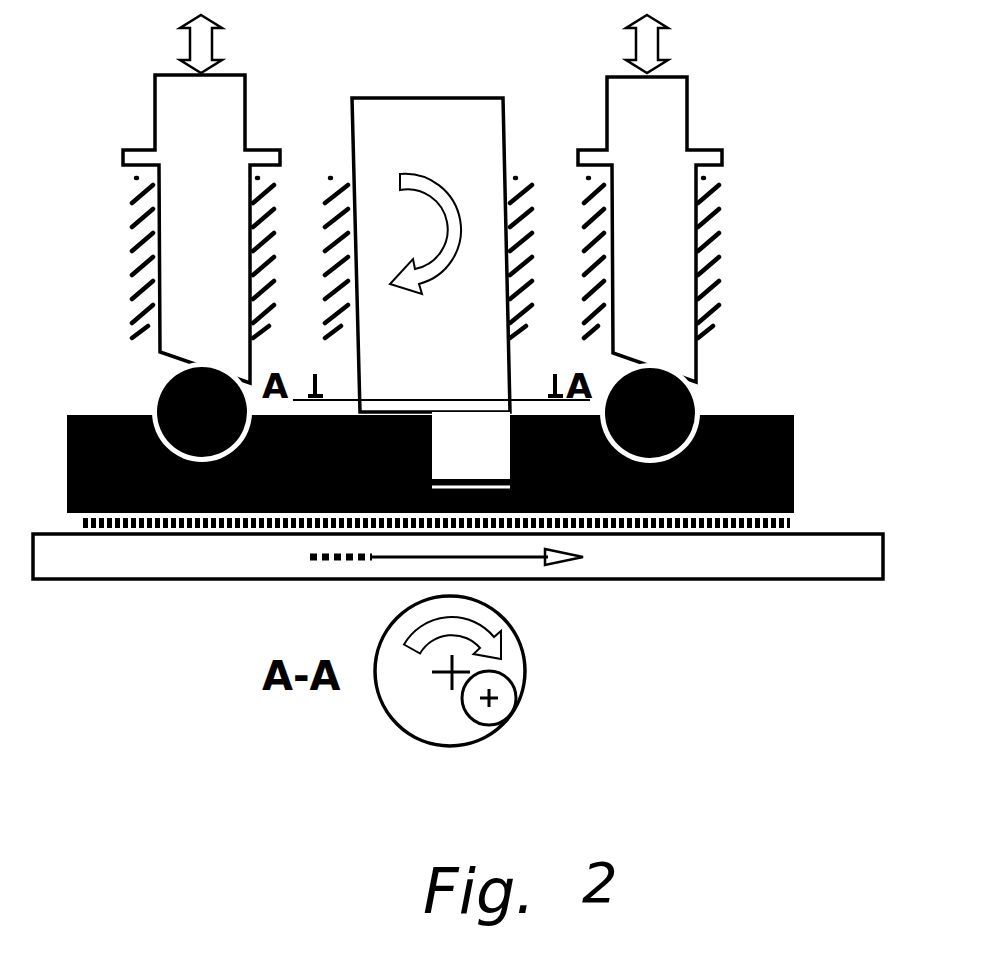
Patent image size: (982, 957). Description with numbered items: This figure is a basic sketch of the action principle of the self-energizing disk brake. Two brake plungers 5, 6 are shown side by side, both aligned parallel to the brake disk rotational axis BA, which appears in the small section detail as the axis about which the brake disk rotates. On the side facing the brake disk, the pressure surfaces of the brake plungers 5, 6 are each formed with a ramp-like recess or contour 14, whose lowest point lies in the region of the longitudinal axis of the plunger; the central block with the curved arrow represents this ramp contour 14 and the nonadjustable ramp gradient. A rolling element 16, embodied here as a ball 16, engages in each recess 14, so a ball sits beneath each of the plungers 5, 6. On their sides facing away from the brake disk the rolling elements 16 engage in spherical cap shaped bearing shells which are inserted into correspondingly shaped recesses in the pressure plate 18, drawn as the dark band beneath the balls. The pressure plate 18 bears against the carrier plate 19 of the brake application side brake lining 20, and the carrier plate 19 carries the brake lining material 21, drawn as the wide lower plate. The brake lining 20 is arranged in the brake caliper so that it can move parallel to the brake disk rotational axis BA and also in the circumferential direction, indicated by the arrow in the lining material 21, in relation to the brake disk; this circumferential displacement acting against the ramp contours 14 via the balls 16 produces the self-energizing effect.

The brake plunger 5 is at (170, 113).
The brake plunger 6 is at (670, 110).
The ramp-like recess or contour 14 is at (477, 136).
The rolling element (ball) 16 is at (700, 400).
The pressure plate 18 is at (795, 438).
The carrier plate 19 is at (795, 519).
The brake lining 20 is at (485, 490).
The brake lining material 21 is at (380, 557).
The brake disk rotational axis BA is at (443, 683).